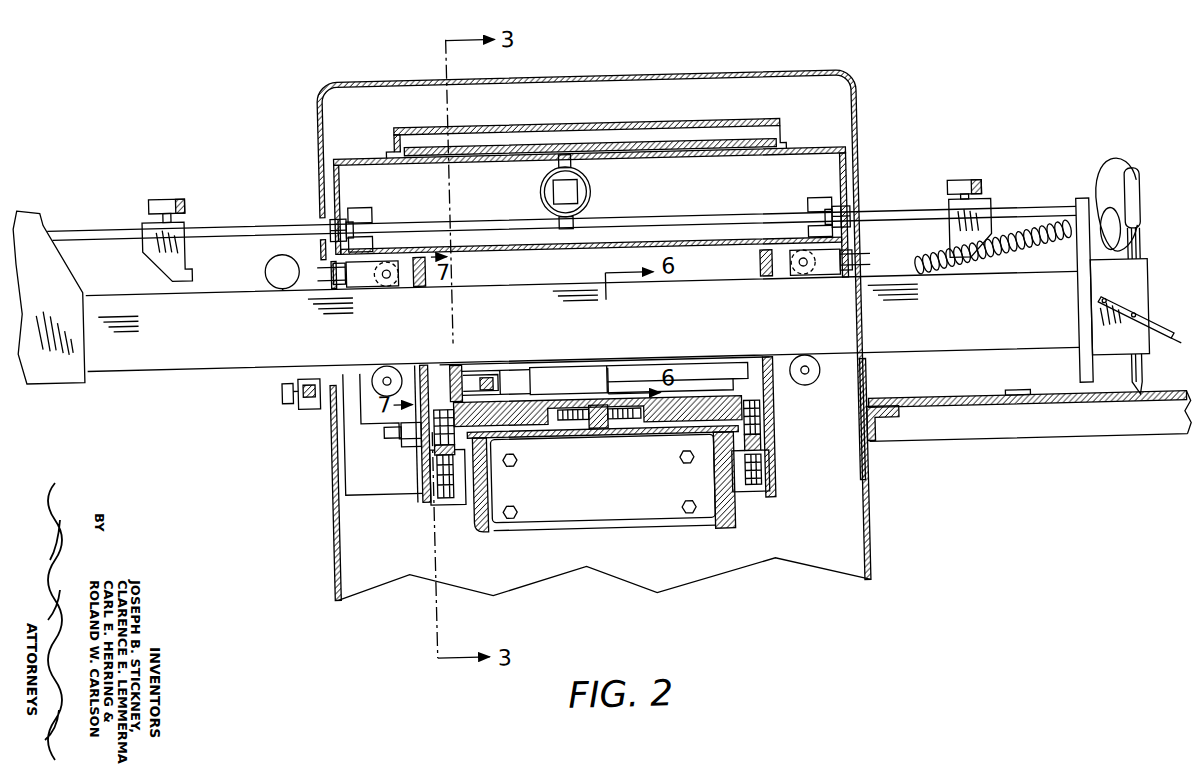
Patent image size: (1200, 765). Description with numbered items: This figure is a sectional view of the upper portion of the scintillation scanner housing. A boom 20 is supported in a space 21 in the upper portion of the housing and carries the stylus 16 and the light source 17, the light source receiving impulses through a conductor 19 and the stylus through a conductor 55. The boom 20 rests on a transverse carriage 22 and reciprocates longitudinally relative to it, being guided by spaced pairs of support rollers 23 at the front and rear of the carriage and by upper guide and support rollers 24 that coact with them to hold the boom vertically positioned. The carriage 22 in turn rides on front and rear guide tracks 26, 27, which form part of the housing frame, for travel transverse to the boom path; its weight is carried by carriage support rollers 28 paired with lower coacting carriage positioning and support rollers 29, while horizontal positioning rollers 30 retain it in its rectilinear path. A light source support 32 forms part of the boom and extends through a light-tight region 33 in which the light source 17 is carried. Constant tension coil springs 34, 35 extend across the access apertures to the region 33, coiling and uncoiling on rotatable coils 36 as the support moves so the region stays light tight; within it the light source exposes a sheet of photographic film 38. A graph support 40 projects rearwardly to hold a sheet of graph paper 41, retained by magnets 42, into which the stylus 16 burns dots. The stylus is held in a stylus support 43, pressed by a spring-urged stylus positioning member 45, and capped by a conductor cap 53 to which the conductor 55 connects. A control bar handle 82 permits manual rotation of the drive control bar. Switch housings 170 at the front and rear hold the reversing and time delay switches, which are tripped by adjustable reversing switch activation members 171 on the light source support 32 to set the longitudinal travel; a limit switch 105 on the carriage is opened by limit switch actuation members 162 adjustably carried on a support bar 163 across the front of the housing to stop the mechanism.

The stylus 16 is at (1150, 247).
The light source 17 is at (600, 191).
The conductor 19 is at (530, 192).
The boom 20 is at (195, 360).
The space 21 is at (539, 268).
The transverse carriage 22 is at (785, 472).
The support rollers 23 is at (392, 361).
The upper guide and support rollers 24 is at (377, 281).
The front guide track 26 is at (424, 454).
The rear guide track 27 is at (790, 444).
The carriage support rollers 28 is at (441, 431).
The carriage positioning and support rollers 29 is at (440, 490).
The horizontal positioning rollers 30 is at (608, 425).
The light source support 32 is at (255, 218).
The light-tight region 33 is at (594, 335).
The constant tension coil spring 34 is at (378, 211).
The constant tension coil spring 35 is at (815, 209).
The rotatable coils 36 is at (352, 212).
The sheet of photographic film 38 is at (703, 126).
The graph support 40 is at (1030, 440).
The sheet of graph paper 41 is at (1165, 409).
The magnets 42 is at (1016, 405).
The stylus support 43 is at (1154, 290).
The stylus positioning member 45 is at (1146, 339).
The conductor cap 53 is at (1146, 195).
The conductor 55 is at (1124, 162).
The control bar handle 82 is at (270, 254).
The limit switch 105 is at (407, 430).
The limit switch actuation members 162 is at (287, 392).
The support bar 163 is at (306, 372).
The switch housings 170 is at (397, 280).
The reversing switch activation members 171 is at (146, 239).